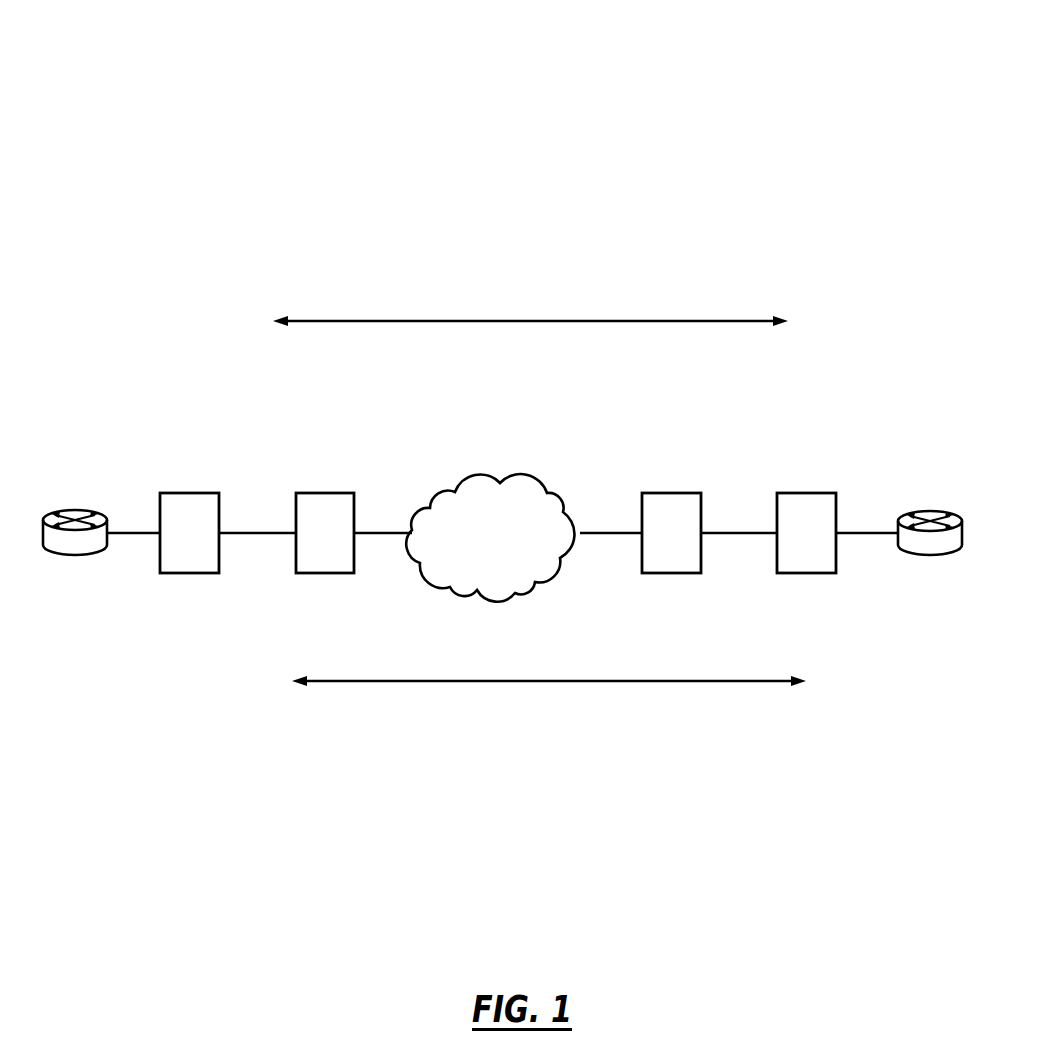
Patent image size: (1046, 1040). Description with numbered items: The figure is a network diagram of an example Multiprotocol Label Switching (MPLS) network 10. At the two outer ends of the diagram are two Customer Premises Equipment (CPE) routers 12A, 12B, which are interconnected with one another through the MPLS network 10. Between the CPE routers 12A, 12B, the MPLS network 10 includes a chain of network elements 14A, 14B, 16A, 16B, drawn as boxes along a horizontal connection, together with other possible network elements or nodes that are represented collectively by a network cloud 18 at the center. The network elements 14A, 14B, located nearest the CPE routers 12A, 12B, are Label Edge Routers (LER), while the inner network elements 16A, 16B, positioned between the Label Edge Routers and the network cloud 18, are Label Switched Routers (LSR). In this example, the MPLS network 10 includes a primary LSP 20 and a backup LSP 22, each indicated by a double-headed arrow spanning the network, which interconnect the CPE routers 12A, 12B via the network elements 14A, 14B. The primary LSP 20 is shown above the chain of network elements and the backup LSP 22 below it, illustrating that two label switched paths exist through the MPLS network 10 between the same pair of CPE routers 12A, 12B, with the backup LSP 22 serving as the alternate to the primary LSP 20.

The MPLS network 10 is at (528, 120).
The Customer Premises Equipment router 12A is at (78, 510).
The Customer Premises Equipment router 12B is at (927, 555).
The network element 14A is at (197, 493).
The network element 14B is at (807, 493).
The network element 16A is at (325, 493).
The network element 16B is at (675, 493).
The network cloud 18 is at (550, 493).
The primary LSP 20 is at (547, 321).
The backup LSP 22 is at (547, 681).